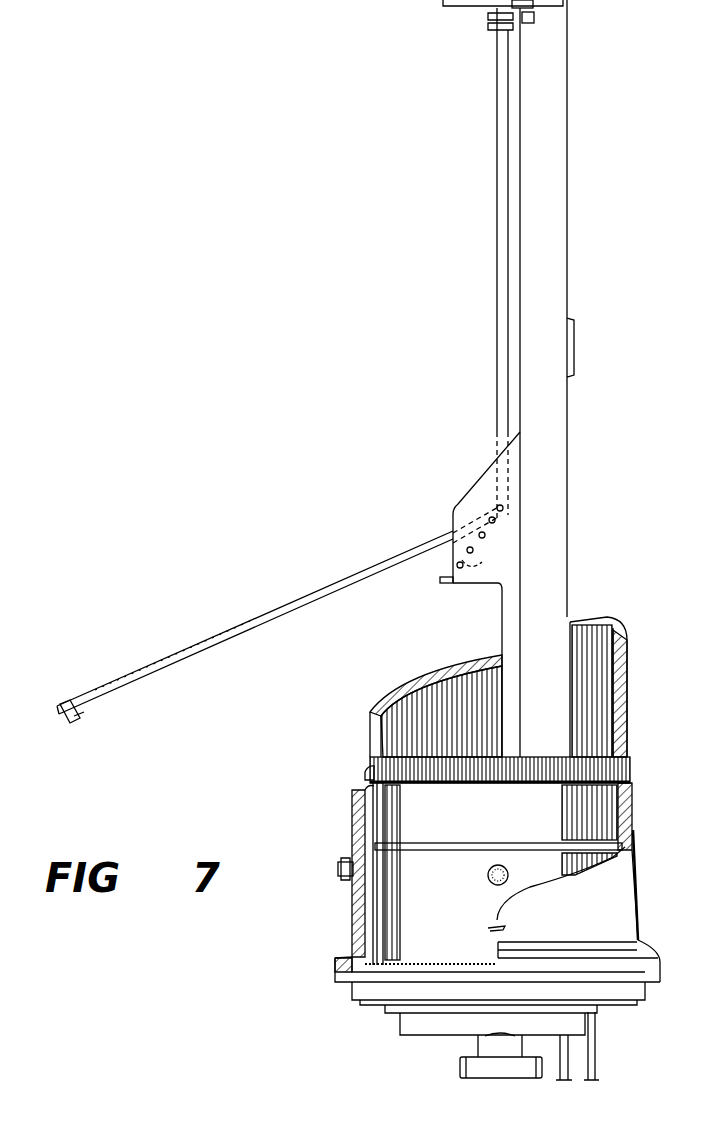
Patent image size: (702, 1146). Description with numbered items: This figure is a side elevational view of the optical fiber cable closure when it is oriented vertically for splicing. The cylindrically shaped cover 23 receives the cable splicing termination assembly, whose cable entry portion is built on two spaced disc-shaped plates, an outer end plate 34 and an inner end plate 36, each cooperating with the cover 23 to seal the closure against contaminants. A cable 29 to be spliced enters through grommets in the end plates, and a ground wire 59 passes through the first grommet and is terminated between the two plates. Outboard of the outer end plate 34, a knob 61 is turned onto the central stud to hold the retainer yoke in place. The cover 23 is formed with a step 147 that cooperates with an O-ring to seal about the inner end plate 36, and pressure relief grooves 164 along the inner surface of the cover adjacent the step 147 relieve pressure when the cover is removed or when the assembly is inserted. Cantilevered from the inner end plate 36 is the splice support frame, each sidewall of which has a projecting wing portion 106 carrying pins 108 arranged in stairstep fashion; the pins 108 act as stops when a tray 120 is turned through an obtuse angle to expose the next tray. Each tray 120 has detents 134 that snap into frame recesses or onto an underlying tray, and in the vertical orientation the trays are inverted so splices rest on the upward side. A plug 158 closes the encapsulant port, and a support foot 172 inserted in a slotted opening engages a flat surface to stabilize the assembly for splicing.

The cover 23 is at (398, 676).
The cable 29 is at (588, 1052).
The outer end plate 34 is at (335, 990).
The inner end plate 36 is at (366, 750).
The ground wire 59 is at (592, 1065).
The knob 61 is at (460, 1065).
The projecting wing portion 106 is at (476, 490).
The pins 108 is at (481, 556).
The tray 120 is at (503, 248).
The detents 134 is at (505, 18).
The step 147 is at (366, 770).
The plug 158 is at (488, 880).
The pressure relief grooves 164 is at (366, 789).
The support foot 172 is at (446, 7).